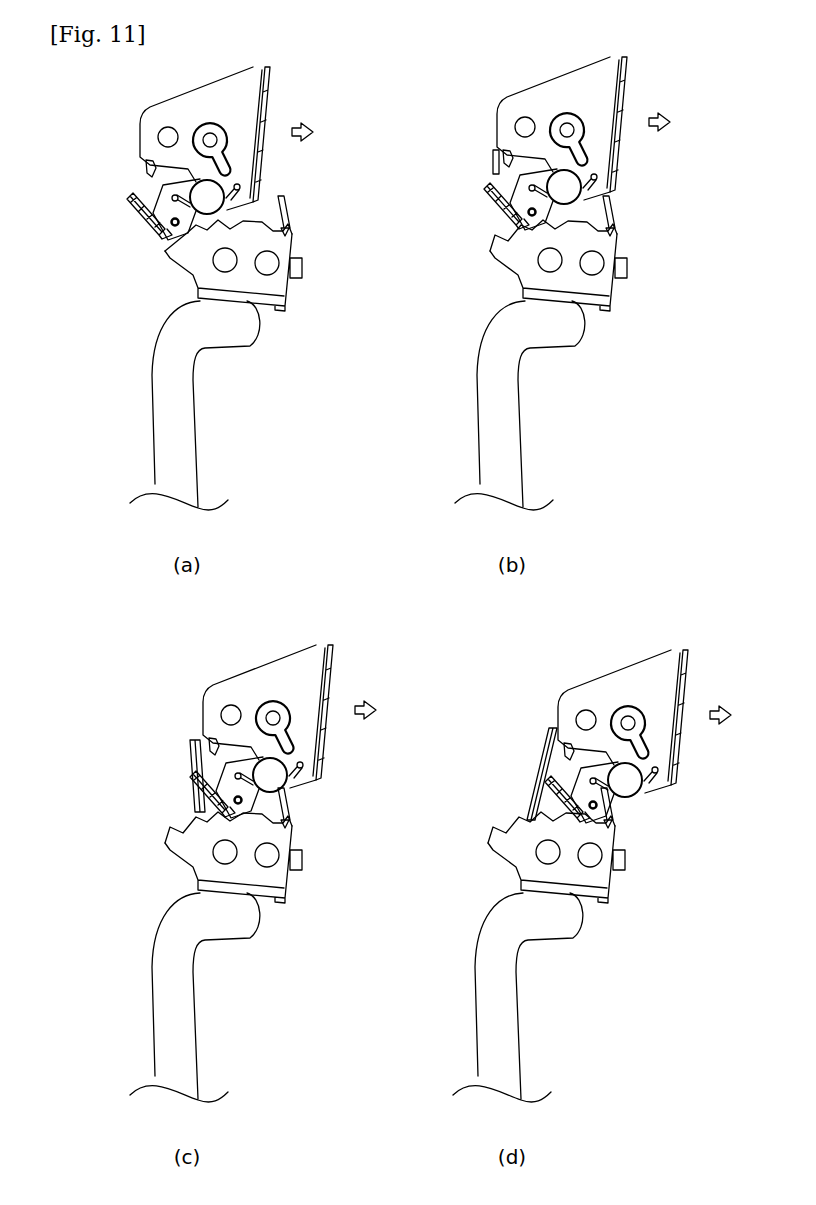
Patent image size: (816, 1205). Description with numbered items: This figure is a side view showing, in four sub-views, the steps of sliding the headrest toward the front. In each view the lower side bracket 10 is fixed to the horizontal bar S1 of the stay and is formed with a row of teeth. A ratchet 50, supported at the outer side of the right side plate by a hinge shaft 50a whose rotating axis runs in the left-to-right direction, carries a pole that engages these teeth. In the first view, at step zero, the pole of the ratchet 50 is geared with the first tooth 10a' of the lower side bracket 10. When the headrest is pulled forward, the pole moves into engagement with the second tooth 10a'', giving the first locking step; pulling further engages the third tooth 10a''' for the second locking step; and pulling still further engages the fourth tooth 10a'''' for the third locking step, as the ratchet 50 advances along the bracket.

The lower side bracket 10 is at (308, 239).
The teeth 10a' is at (187, 251).
The second tooth 10a'' is at (527, 265).
The third tooth 10a''' is at (200, 851).
The fourth tooth 10a'''' is at (522, 854).
The ratchet 50 is at (147, 183).
The hinge shaft of the ratchet 50a is at (148, 168).
The horizontal bar S1 is at (248, 332).